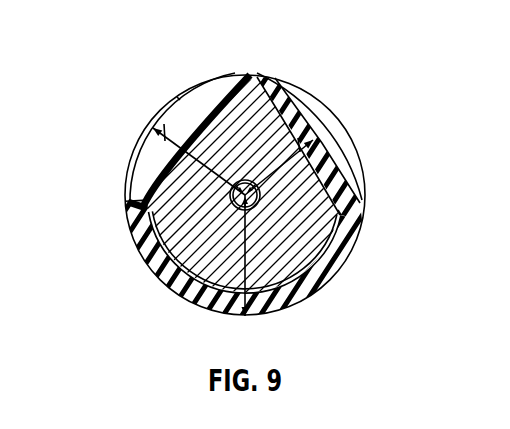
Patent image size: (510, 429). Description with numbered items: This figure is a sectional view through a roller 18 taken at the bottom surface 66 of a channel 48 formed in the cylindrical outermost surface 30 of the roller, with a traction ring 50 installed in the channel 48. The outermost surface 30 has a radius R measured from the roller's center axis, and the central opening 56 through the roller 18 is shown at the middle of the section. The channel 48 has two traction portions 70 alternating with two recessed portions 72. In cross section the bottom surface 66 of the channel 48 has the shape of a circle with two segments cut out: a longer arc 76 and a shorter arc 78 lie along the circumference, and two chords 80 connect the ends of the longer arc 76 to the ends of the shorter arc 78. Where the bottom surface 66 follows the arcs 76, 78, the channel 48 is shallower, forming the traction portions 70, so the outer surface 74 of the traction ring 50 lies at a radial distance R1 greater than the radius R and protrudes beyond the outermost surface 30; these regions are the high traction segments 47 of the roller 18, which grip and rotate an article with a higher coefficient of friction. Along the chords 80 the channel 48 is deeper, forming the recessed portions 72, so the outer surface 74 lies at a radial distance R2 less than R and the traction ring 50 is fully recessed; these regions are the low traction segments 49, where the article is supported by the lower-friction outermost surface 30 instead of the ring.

The roller 18 is at (114, 47).
The high traction segment 47 is at (246, 79).
The outermost surface 30 is at (252, 97).
The bottom surface of the channel 66 is at (362, 194).
The traction ring 50 is at (343, 242).
The opening 56 is at (162, 243).
The longer arc 76 is at (148, 262).
The shorter arc 78 is at (256, 78).
The traction portion 70 is at (333, 45).
The outer surface of the traction ring 74 is at (365, 212).
The chords 80 is at (126, 210).
The channel 48 is at (340, 172).
The low traction segment 49 is at (178, 98).
The recessed portion 72 is at (126, 116).
The radius of the outermost surface R is at (132, 157).
The radial distance of the traction ring outer surface in the recessed portion R2 is at (312, 125).
The radial distance of the traction ring outer surface in the traction portion R1 is at (208, 307).